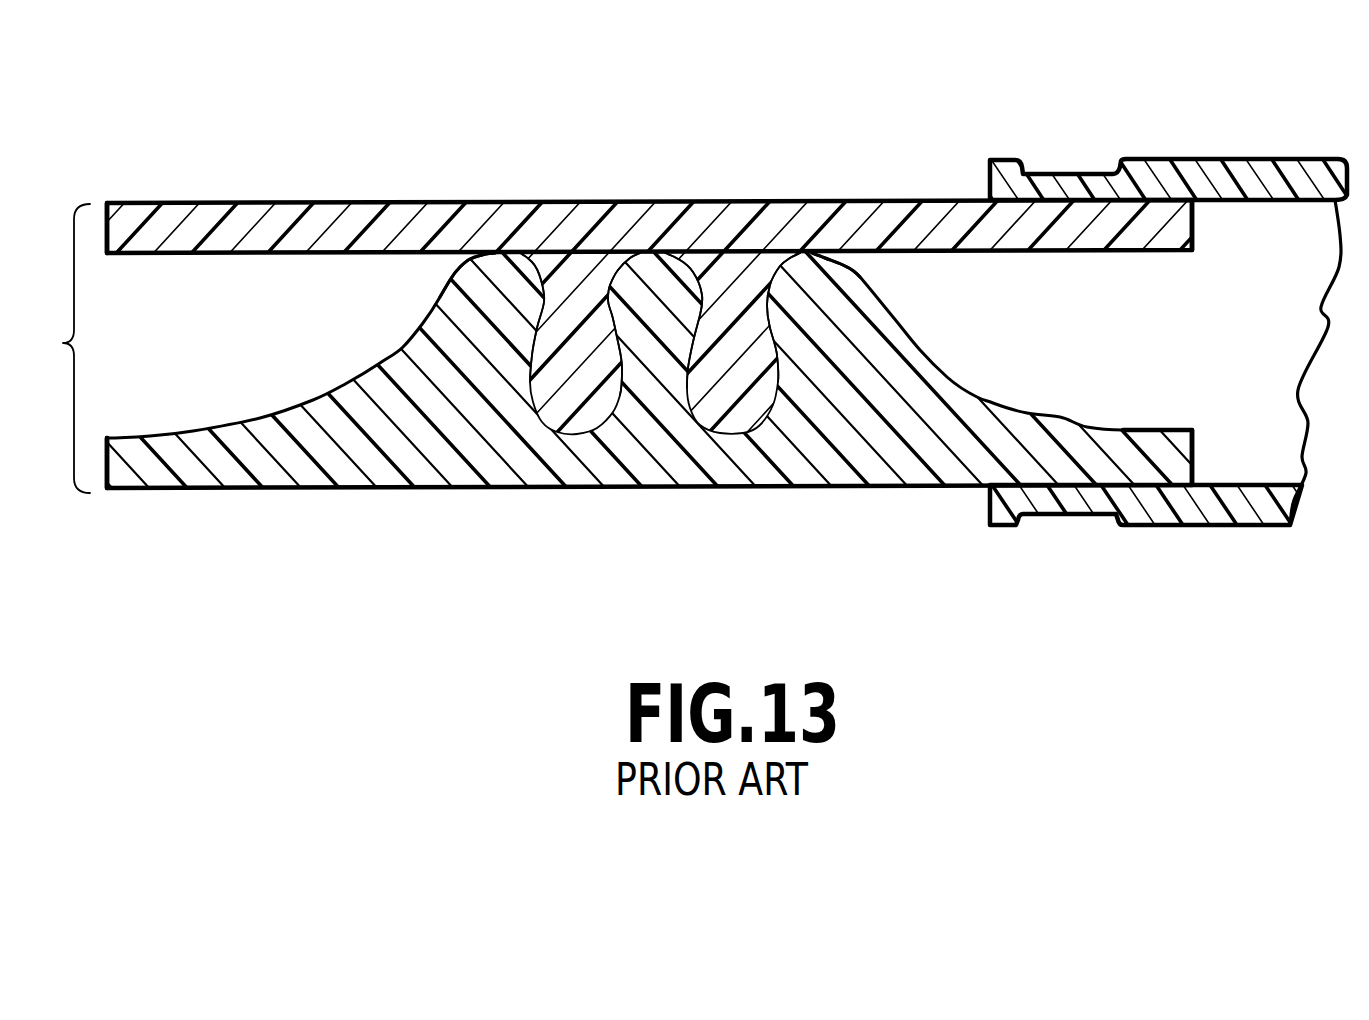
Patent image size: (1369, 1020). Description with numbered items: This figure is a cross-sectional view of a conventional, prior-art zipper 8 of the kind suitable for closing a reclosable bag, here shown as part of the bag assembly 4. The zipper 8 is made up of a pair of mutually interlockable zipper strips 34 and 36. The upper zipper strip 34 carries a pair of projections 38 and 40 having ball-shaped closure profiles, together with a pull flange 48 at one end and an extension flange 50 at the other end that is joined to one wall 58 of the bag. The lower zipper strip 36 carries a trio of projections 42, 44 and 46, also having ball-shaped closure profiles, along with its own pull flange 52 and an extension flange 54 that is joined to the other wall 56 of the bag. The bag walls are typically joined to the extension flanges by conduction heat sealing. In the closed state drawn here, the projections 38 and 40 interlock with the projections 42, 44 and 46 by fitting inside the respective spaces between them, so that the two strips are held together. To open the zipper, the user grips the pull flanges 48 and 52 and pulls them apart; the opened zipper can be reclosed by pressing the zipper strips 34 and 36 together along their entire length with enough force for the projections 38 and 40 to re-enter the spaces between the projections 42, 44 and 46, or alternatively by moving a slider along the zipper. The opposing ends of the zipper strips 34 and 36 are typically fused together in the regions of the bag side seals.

The assembly 4 is at (1262, 530).
The zipper 8 is at (57, 348).
The zipper strip 34 is at (593, 202).
The zipper strip 36 is at (588, 490).
The projection 38 is at (555, 405).
The projection 40 is at (747, 397).
The projection 42 is at (503, 282).
The projection 44 is at (675, 270).
The projection 46 is at (807, 275).
The pull flange 48 is at (138, 218).
The extension flange 50 is at (1140, 233).
The pull flange 52 is at (163, 450).
The extension flange 54 is at (1160, 443).
The wall 56 is at (1160, 505).
The wall 58 is at (1210, 176).